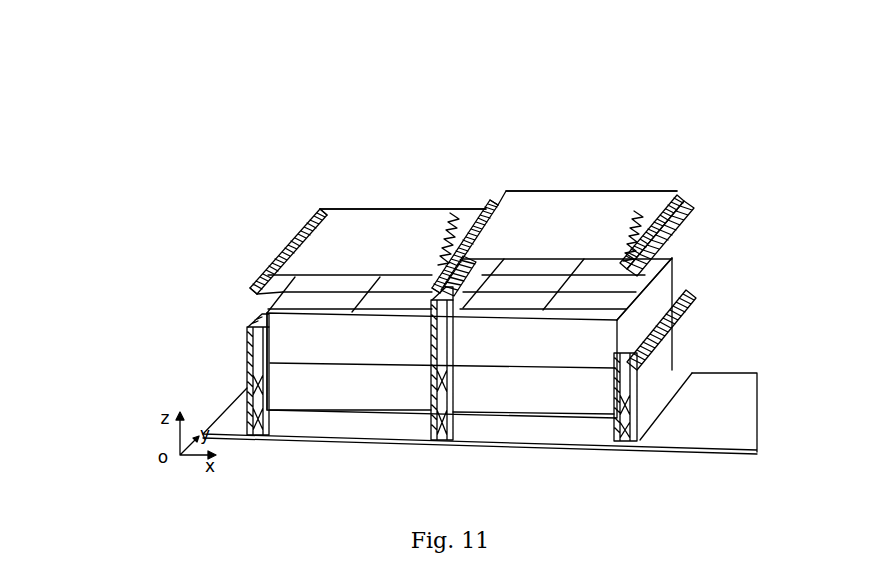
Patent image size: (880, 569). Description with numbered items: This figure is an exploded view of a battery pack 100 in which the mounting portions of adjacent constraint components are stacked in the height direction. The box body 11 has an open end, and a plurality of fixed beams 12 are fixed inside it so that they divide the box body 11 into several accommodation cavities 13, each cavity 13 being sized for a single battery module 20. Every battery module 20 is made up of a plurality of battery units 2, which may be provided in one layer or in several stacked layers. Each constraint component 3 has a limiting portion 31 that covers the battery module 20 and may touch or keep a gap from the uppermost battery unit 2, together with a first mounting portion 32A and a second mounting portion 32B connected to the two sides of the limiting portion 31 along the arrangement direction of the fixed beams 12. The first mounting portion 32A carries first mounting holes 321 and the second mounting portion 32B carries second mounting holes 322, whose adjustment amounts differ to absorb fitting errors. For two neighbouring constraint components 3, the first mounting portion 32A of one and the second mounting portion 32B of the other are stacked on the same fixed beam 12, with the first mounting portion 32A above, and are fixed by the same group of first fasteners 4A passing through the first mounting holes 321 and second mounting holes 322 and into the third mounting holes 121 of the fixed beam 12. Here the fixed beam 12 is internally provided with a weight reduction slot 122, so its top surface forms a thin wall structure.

The battery pack 100 is at (487, 117).
The battery unit 2 is at (295, 292).
The battery module 20 is at (262, 318).
The constraint component 3 is at (284, 226).
The limiting portion 31 is at (342, 218).
The first mounting portion 32A is at (308, 218).
The second mounting portion 32B is at (430, 277).
The first mounting hole 321 is at (265, 267).
The second mounting hole 322 is at (677, 227).
The first fastener 4A is at (453, 218).
The box body 11 is at (700, 434).
The fixed beam 12 is at (253, 430).
The third mounting hole 121 is at (258, 333).
The weight reduction slot 122 is at (630, 366).
The accommodation cavity 13 is at (355, 428).